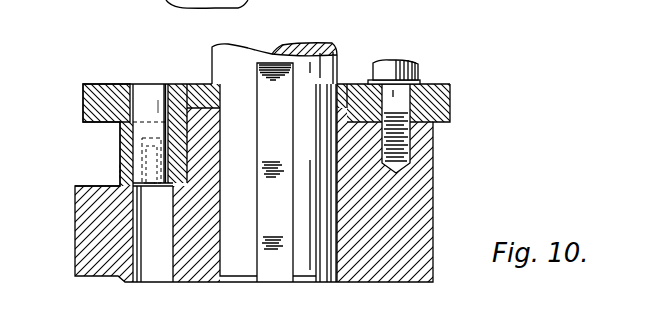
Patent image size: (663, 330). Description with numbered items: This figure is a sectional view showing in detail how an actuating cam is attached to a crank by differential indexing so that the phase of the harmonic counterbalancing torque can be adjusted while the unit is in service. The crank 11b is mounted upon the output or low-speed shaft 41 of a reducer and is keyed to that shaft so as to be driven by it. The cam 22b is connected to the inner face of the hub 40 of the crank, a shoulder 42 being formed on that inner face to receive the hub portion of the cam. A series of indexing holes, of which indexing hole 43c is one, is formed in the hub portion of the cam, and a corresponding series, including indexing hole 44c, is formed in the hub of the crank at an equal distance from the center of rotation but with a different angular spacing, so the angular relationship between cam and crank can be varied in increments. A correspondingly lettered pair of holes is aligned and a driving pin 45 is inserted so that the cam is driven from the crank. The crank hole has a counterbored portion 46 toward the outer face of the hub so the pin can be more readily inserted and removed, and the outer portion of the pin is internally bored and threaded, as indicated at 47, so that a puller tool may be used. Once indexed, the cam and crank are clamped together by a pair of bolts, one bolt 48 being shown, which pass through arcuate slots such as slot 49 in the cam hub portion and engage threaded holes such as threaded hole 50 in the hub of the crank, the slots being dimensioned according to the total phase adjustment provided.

The crank 11b is at (75, 240).
The cam 22b is at (448, 107).
The hub 40 is at (425, 206).
The output or low-speed shaft 41 is at (245, 52).
The shoulder 42 is at (196, 84).
The indexing hole 43c is at (121, 97).
The indexing hole 44c is at (128, 134).
The driving pin 45 is at (138, 145).
The counterbored portion 46 is at (155, 268).
The internally bored and threaded portion 47 is at (120, 172).
The bolt 48 is at (418, 64).
The arcuate slot 49 is at (408, 100).
The threaded hole 50 is at (412, 146).